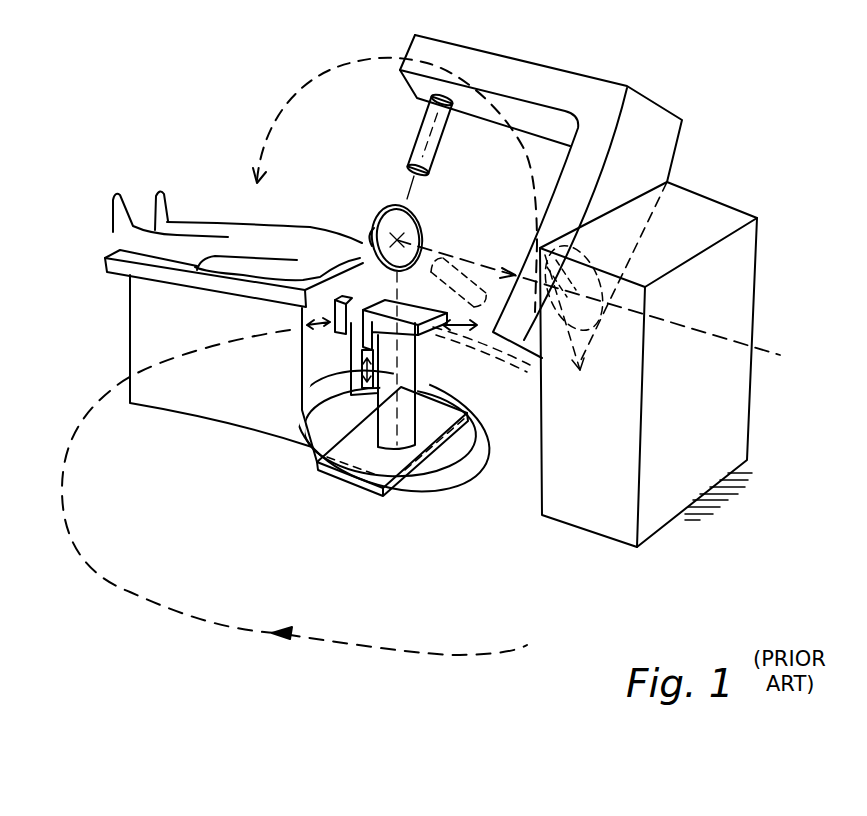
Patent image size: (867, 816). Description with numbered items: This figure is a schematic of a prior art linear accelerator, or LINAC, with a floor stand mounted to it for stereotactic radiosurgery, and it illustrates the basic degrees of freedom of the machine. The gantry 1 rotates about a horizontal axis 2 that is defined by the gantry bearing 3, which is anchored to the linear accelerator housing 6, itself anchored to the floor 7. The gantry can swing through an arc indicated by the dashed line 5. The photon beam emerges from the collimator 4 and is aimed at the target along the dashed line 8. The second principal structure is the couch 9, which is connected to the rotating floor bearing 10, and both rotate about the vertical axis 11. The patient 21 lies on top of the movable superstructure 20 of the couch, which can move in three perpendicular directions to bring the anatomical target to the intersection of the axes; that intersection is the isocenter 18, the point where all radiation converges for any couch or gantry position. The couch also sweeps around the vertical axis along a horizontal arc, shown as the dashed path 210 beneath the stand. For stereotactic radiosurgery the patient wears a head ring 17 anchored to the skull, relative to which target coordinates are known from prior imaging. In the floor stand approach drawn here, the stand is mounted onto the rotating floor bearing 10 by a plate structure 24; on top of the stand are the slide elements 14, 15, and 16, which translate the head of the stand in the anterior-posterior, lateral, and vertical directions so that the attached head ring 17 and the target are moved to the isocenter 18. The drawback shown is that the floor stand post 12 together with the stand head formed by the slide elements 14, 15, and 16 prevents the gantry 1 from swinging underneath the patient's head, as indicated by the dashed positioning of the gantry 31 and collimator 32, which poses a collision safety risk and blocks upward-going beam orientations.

The gantry 1 is at (565, 78).
The horizontal axis 2 is at (705, 328).
The gantry bearing 3 is at (568, 345).
The collimator 4 is at (420, 130).
The arc of gantry swing 5 is at (298, 92).
The linear accelerator housing 6 is at (712, 195).
The floor 7 is at (690, 498).
The photon beam line 8 is at (407, 200).
The couch 9 is at (130, 340).
The rotating floor bearing 10 is at (333, 485).
The vertical axis 11 is at (415, 396).
The floor stand post 12 is at (460, 480).
The slide element 14 is at (340, 322).
The slide element 15 is at (350, 368).
The slide element 16 is at (435, 330).
The head ring 17 is at (377, 213).
The isocenter 18 is at (397, 240).
The movable superstructure of the couch 20 is at (103, 260).
The patient 21 is at (217, 223).
The plate structure 24 is at (386, 493).
The dashed gantry position 31 is at (483, 260).
The dashed collimator position 32 is at (438, 270).
The base rotation path 210 is at (80, 437).